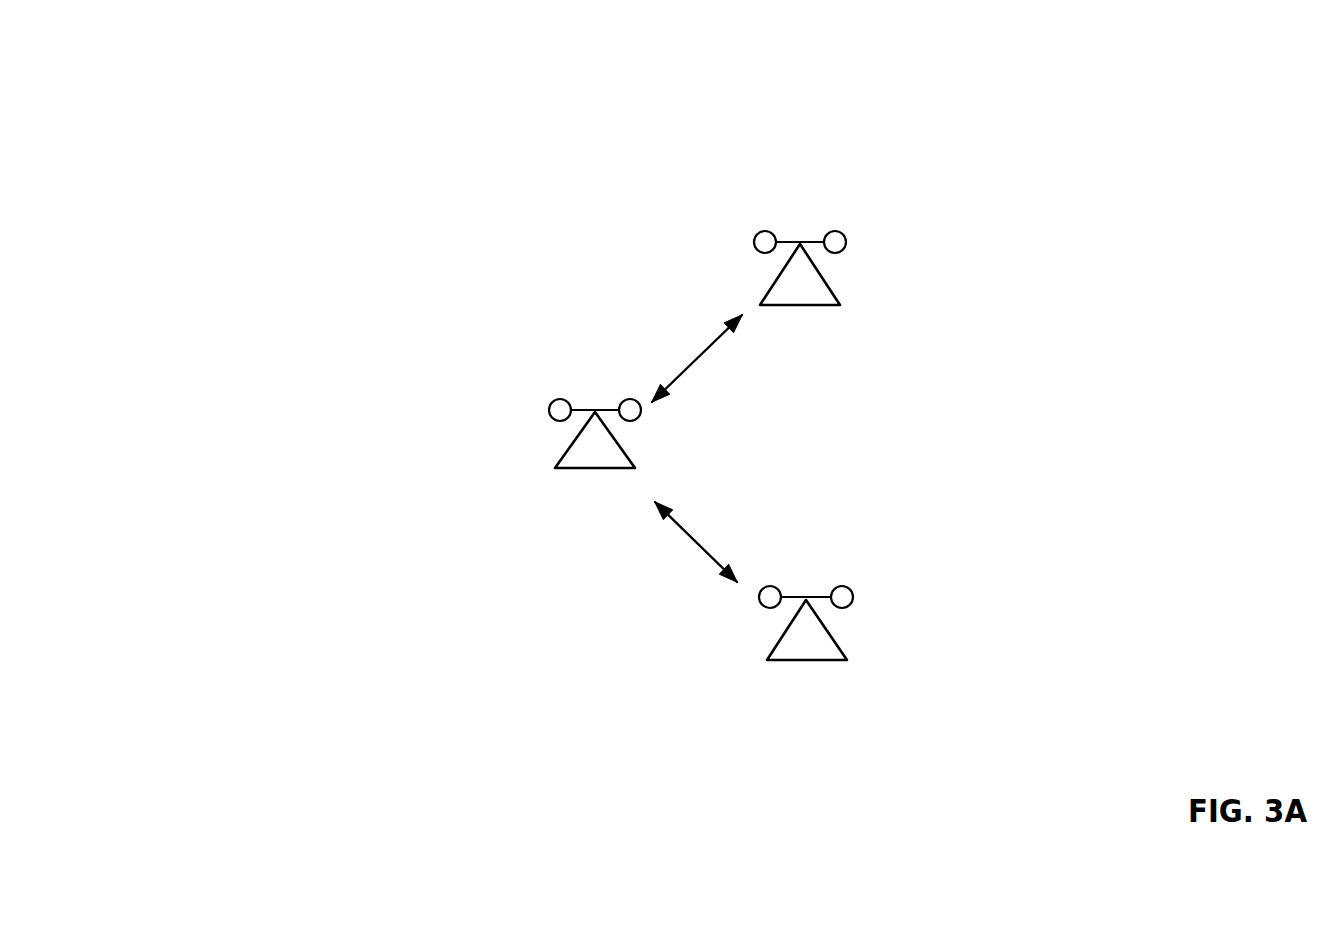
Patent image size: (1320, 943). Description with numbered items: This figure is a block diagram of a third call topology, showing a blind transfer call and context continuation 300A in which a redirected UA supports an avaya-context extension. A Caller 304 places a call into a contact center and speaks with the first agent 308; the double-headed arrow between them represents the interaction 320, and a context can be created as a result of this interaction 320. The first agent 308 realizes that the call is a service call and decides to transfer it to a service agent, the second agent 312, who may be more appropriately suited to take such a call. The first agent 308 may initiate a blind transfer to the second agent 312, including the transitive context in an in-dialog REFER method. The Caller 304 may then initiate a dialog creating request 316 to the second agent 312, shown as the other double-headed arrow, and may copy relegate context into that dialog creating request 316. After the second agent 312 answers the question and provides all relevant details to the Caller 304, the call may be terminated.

The blind transfer call and context continuation 300A is at (97, 110).
The Caller 304 is at (560, 399).
The Agent 1 308 is at (769, 587).
The Agent 2 312 is at (765, 232).
The dialog creating request 316 is at (700, 362).
The interaction 320 is at (688, 538).